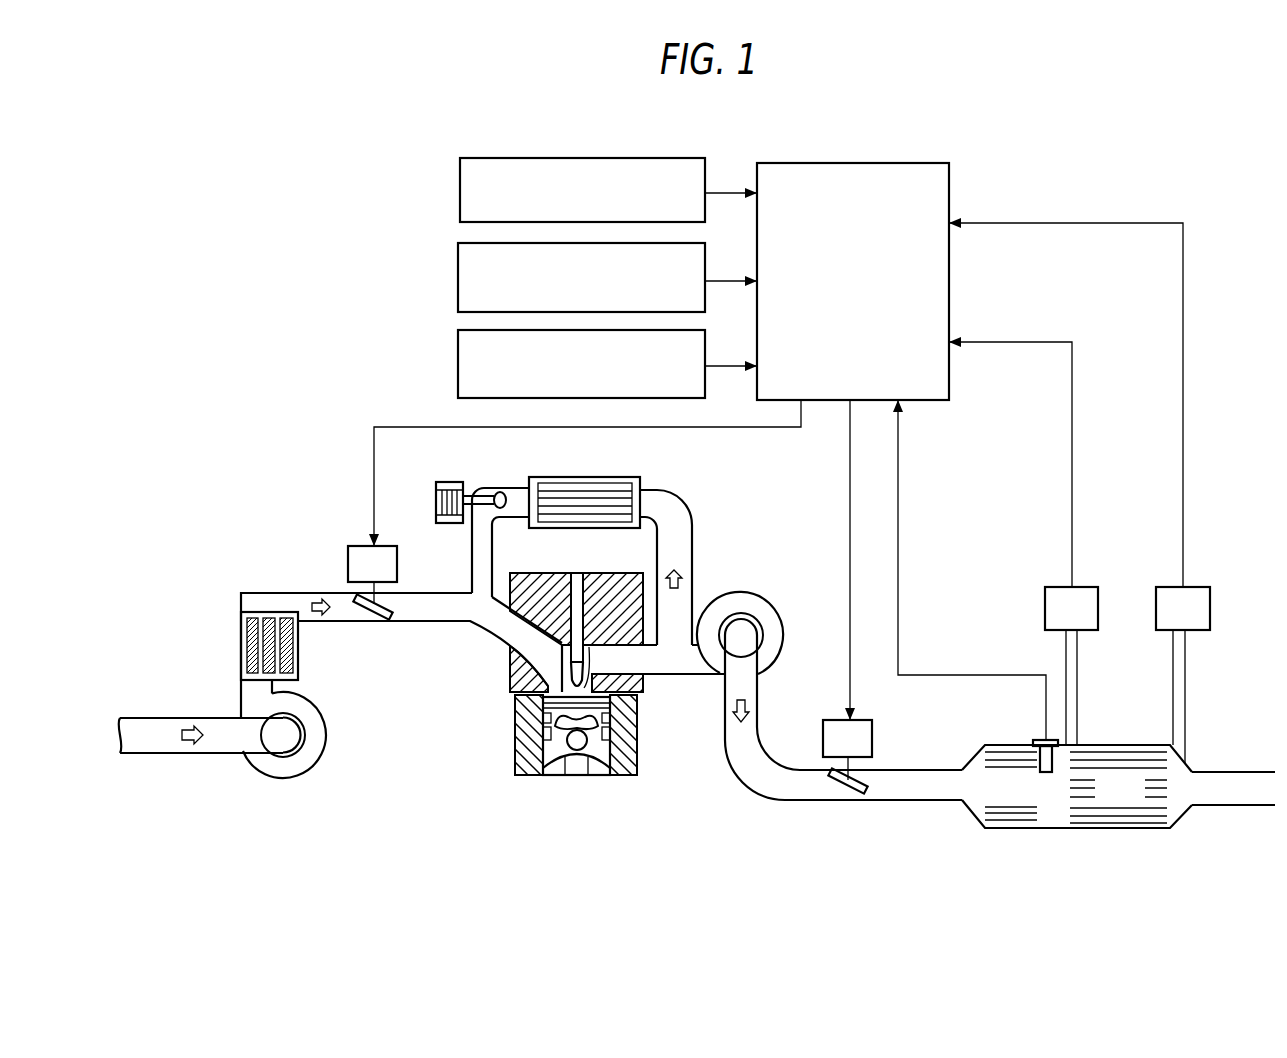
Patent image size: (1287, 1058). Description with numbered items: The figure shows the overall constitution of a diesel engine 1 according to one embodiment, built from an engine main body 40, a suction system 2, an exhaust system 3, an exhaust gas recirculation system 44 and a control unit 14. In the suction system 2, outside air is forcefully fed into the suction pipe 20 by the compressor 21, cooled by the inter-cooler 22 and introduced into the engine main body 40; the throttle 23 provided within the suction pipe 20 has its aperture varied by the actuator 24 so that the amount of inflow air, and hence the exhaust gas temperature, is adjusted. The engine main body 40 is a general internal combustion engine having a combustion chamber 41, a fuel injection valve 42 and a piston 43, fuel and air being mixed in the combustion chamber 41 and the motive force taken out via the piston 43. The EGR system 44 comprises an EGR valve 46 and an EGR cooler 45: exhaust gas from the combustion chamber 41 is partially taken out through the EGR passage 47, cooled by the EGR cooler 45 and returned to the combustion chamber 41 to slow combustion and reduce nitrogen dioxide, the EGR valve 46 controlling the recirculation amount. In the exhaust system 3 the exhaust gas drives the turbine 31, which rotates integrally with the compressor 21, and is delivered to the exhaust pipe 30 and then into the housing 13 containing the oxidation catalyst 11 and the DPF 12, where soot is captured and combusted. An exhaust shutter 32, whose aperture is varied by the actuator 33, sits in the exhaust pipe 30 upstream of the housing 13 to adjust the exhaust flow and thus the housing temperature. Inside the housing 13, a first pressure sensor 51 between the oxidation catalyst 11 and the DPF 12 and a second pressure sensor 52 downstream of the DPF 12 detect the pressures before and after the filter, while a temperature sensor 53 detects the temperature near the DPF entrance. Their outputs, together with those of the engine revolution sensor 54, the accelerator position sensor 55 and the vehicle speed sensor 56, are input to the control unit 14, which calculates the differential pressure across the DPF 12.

The exhaust emission control system 1 is at (1178, 186).
The suction system 2 is at (245, 566).
The exhaust system 3 is at (960, 840).
The oxidation catalyst 11 is at (1008, 815).
The diesel particulate filter 12 is at (1105, 815).
The housing 13 is at (1178, 822).
The control unit 14 is at (853, 163).
The suction pipe 20 is at (422, 595).
The compressor 21 is at (327, 733).
The inter-cooler 22 is at (241, 645).
The throttle 23 is at (360, 612).
The actuator 24 is at (348, 563).
The exhaust pipe 30 is at (910, 770).
The turbine 31 is at (741, 592).
The exhaust shutter 32 is at (835, 780).
The actuator 33 is at (835, 720).
The engine main body 40 is at (515, 752).
The combustion chamber 41 is at (515, 723).
The fuel injection valve 42 is at (575, 684).
The piston 43 is at (560, 758).
The EGR system 44 is at (665, 479).
The EGR cooler 45 is at (583, 477).
The EGR valve 46 is at (450, 482).
The EGR passage 47 is at (694, 528).
The first pressure sensor 51 is at (1045, 608).
The second pressure sensor 52 is at (1210, 608).
The temperature sensor 53 is at (1040, 740).
The engine revolution sensor 54 is at (458, 277).
The accelerator position sensor 55 is at (458, 364).
The vehicle speed sensor 56 is at (460, 190).